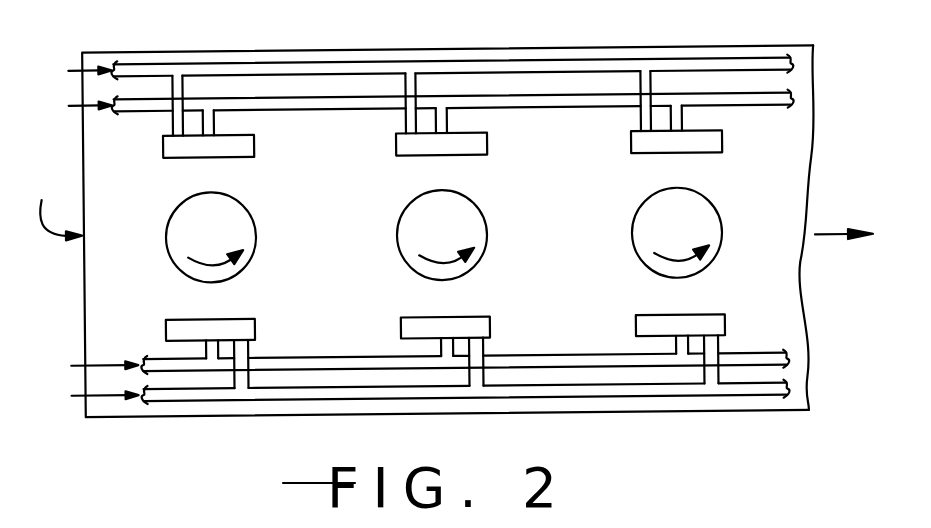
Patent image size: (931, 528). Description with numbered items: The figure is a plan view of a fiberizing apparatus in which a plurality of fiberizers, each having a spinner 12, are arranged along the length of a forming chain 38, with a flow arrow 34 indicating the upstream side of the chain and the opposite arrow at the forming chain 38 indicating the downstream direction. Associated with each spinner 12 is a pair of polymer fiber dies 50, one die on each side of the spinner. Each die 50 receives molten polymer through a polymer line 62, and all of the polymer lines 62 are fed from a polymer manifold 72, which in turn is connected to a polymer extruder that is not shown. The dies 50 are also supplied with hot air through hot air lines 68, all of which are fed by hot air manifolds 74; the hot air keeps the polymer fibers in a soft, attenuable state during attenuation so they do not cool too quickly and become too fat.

The spinner 12 is at (255, 227).
The inlet 34 is at (49, 200).
The forming chain 38 is at (813, 184).
The polymer fiber die 50 is at (233, 158).
The polymer line 62 is at (216, 117).
The hot air line 68 is at (187, 85).
The polymer manifold 72 is at (150, 115).
The hot air manifold 74 is at (621, 400).